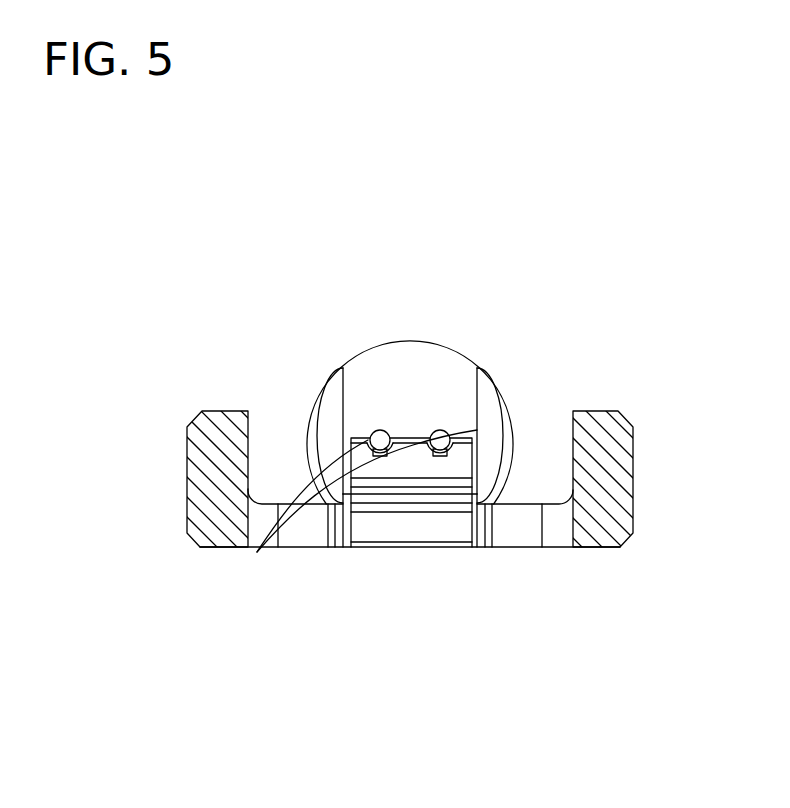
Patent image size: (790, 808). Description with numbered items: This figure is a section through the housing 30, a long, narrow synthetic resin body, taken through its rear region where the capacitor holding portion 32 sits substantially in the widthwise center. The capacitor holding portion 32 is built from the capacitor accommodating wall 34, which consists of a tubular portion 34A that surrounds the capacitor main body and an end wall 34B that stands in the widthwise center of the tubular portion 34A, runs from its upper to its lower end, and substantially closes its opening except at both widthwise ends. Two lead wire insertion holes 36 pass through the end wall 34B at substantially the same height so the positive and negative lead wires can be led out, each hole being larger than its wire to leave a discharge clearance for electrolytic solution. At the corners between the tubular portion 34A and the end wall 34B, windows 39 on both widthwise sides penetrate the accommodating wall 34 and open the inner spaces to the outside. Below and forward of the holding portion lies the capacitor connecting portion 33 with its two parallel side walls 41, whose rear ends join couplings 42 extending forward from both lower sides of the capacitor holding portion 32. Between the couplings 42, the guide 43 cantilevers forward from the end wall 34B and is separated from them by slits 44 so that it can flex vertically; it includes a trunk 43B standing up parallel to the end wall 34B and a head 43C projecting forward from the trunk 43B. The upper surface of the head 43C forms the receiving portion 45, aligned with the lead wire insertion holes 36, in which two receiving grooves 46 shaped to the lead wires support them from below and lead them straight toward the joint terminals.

The housing 30 is at (372, 150).
The capacitor holding portion 32 is at (406, 352).
The capacitor connecting portion 33 is at (603, 420).
The capacitor accommodating wall 34 is at (347, 242).
The tubular portion 34A is at (312, 428).
The end wall 34B is at (372, 368).
The lead wire insertion holes 36 is at (392, 433).
The windows 39 is at (318, 413).
The side walls 41 is at (202, 445).
The couplings 42 is at (302, 535).
The guide 43 is at (390, 507).
The trunk 43B is at (422, 507).
The head 43C is at (445, 473).
The slits 44 is at (345, 533).
The receiving portion 45 is at (477, 430).
The receiving grooves 46 is at (257, 552).